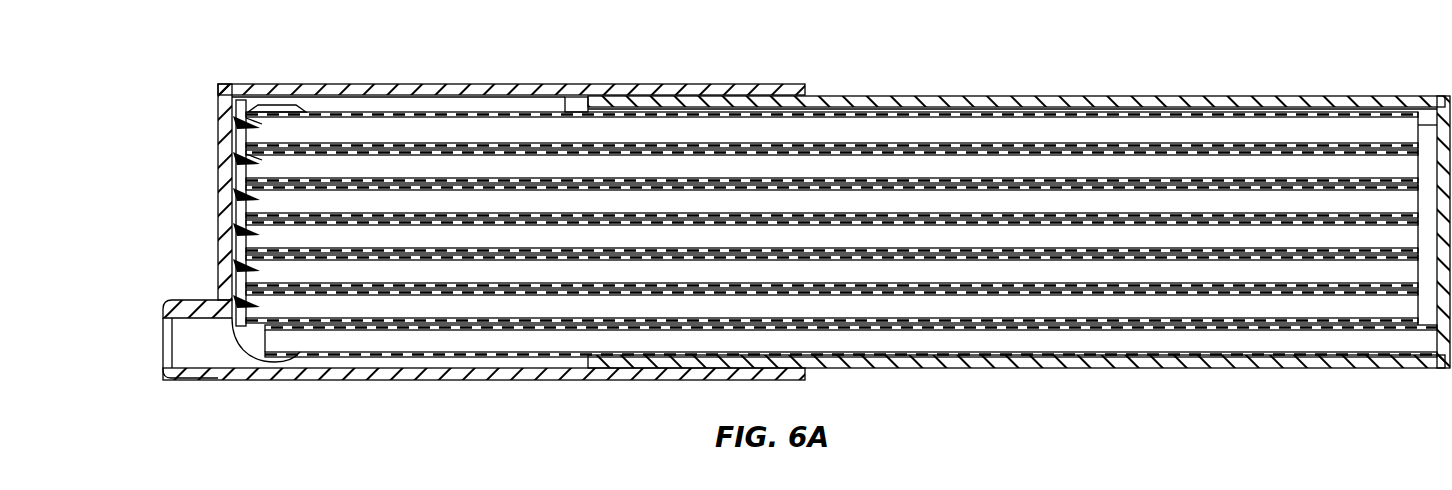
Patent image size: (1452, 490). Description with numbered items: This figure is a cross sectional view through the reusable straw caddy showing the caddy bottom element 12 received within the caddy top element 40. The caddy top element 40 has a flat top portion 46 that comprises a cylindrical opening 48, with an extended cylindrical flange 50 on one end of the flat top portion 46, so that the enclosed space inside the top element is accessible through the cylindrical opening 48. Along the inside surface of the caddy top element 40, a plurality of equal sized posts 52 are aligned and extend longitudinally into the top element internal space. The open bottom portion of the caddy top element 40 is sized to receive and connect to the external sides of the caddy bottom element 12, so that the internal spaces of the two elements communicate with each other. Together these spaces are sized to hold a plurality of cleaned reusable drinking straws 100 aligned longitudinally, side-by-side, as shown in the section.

The caddy bottom element 12 is at (1153, 90).
The caddy top element 40 is at (447, 82).
The flat top portion 46 is at (222, 213).
The cylindrical opening 48 is at (222, 355).
The extended cylindrical flange 50 is at (190, 300).
The posts 52 is at (250, 153).
The cleaned reusable drinking straws 100 is at (1342, 202).